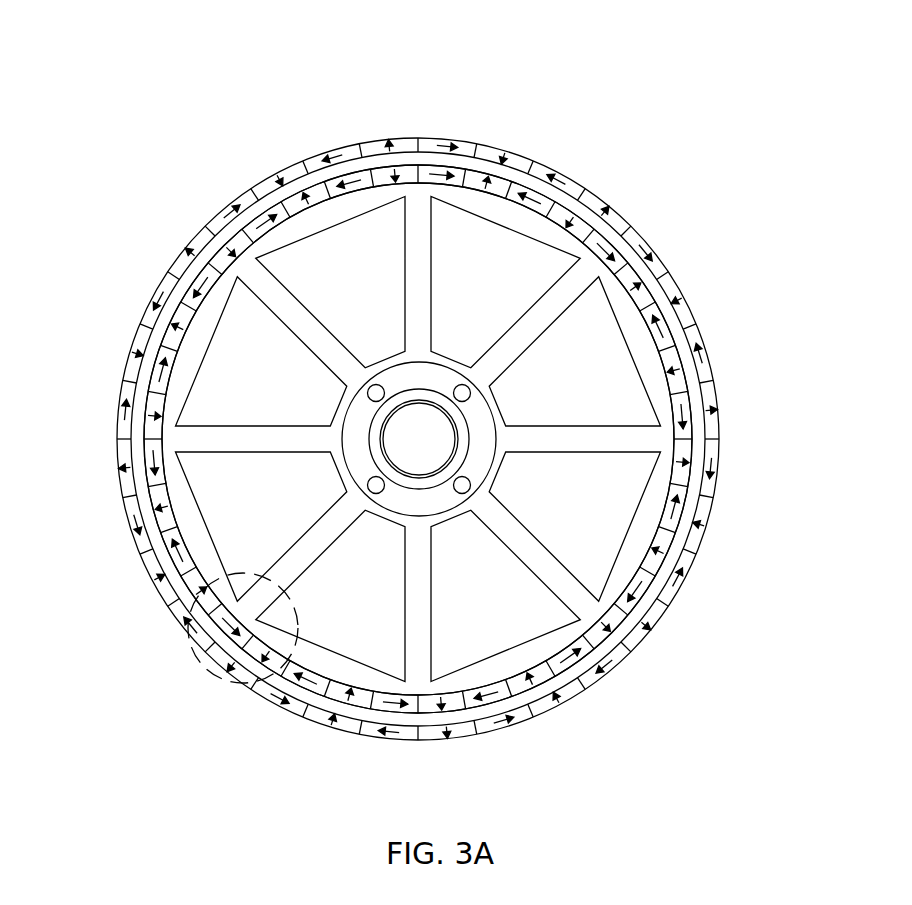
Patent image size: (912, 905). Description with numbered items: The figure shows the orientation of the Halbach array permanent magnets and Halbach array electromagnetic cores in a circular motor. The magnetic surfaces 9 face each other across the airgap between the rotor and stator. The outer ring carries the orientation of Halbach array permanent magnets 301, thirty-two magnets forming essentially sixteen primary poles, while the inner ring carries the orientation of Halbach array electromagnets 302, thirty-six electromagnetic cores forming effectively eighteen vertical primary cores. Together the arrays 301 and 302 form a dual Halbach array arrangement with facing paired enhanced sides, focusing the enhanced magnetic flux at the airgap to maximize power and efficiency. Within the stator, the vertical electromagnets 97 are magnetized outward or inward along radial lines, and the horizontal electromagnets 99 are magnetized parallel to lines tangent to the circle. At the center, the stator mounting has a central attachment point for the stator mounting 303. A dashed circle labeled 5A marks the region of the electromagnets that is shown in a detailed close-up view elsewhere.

The magnetic surfaces 9 is at (490, 173).
The orientation of Halbach array permanent magnets 301 is at (207, 229).
The orientation of Halbach array electromagnets 302 is at (153, 485).
The vertical electromagnets in stator 97 is at (655, 303).
The horizontal electromagnets in stator 99 is at (693, 437).
The attachment point for the stator mounting 303 is at (477, 450).
The detail region shown in FIG. 5A is at (190, 642).